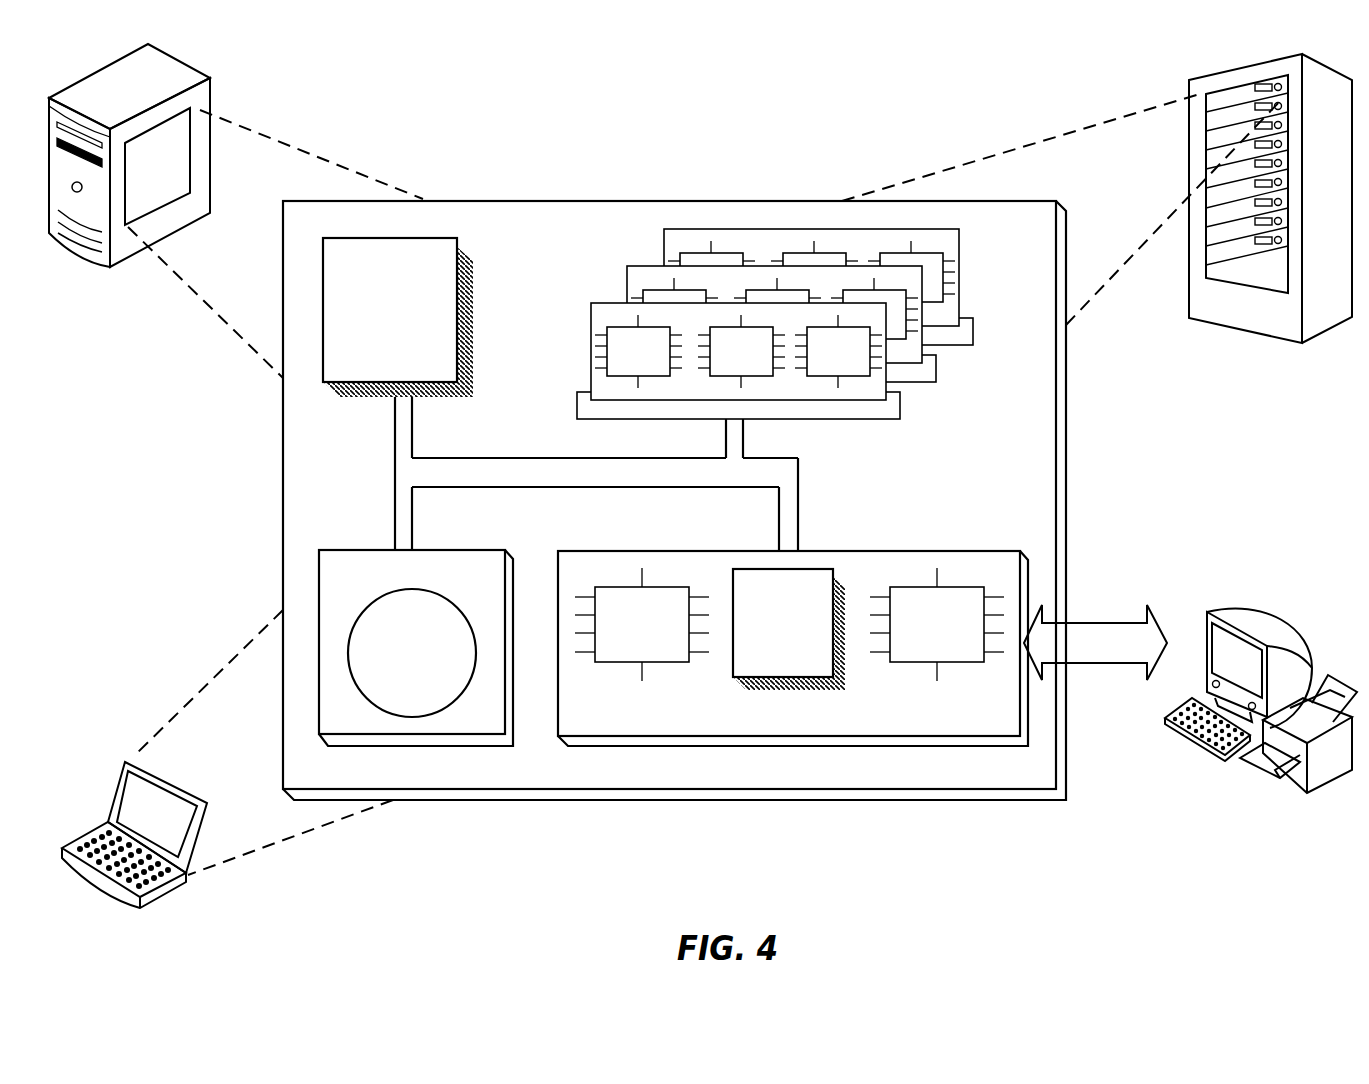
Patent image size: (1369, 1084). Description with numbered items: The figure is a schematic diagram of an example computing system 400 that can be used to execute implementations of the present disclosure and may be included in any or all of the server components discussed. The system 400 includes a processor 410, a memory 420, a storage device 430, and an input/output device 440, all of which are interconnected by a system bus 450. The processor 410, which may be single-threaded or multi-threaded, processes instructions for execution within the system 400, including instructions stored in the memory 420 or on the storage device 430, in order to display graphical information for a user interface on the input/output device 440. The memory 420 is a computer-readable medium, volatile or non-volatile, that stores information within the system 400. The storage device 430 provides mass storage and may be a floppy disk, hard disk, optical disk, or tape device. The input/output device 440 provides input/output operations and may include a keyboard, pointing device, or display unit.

The computing system 400 is at (488, 116).
The processor 410 is at (448, 373).
The memory 420 is at (966, 379).
The storage device 430 is at (495, 726).
The input/output device 440 is at (1206, 612).
The system bus 450 is at (590, 477).